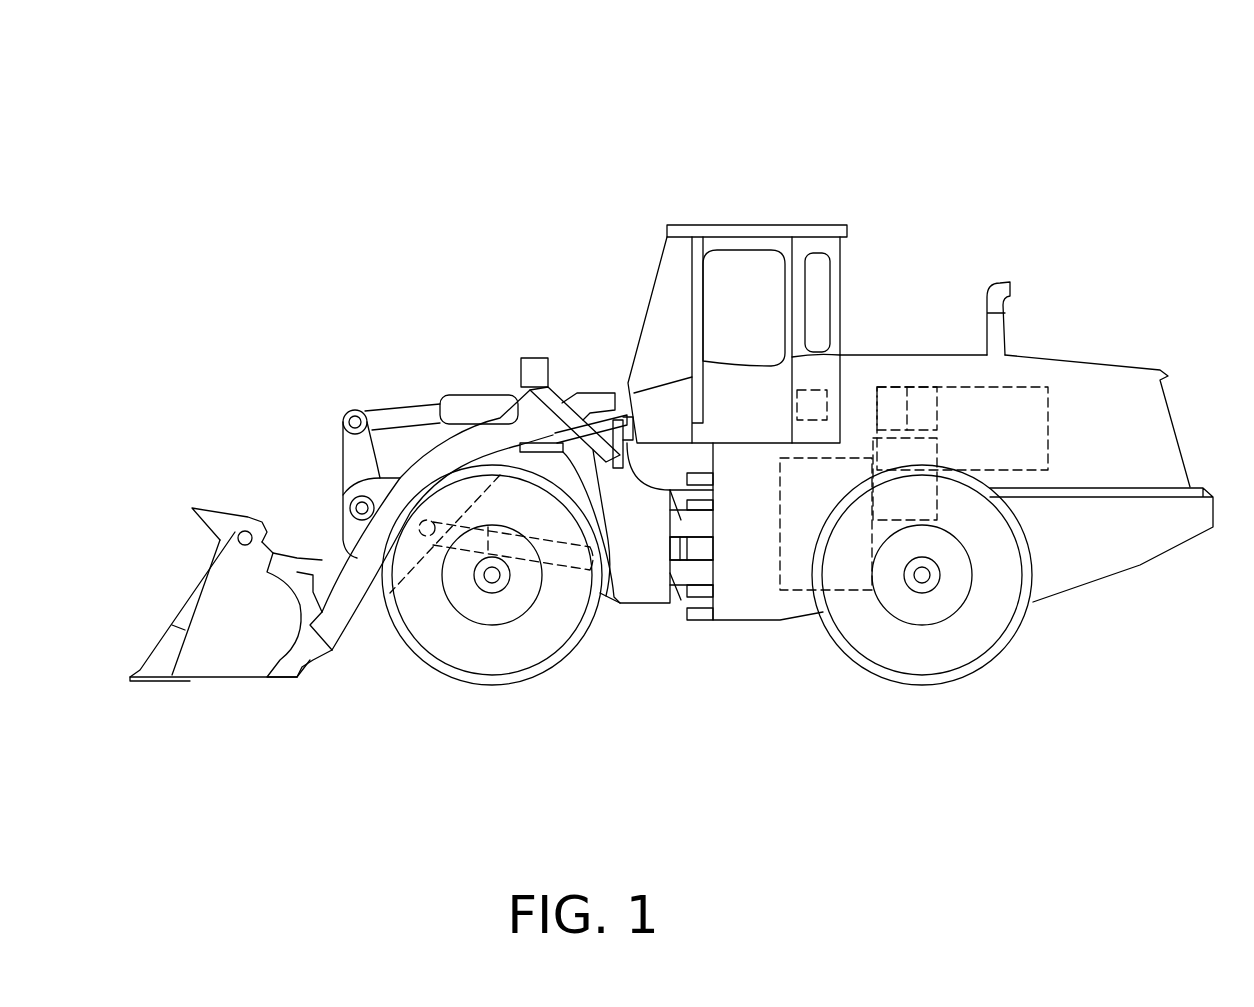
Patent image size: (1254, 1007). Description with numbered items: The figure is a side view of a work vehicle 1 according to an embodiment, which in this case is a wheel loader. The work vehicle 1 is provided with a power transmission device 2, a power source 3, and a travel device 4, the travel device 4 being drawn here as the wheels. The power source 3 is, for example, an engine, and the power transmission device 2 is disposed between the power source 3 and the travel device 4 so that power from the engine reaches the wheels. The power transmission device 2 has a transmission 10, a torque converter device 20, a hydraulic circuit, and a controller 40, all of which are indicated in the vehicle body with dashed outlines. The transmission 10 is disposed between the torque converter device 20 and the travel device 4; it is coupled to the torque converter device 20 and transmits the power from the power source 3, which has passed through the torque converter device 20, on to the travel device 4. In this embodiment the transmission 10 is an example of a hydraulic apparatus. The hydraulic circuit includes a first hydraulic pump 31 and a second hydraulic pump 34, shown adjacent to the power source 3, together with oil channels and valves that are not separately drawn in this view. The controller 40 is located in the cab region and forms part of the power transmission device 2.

The work vehicle 1 is at (987, 130).
The power transmission device 2 is at (800, 126).
The power source 3 is at (1040, 387).
The travel device 4 is at (500, 615).
The transmission 10 is at (848, 458).
The torque converter device 20 is at (875, 443).
The first hydraulic pump 31 is at (902, 387).
The second hydraulic pump 34 is at (930, 438).
The controller 40 is at (818, 388).